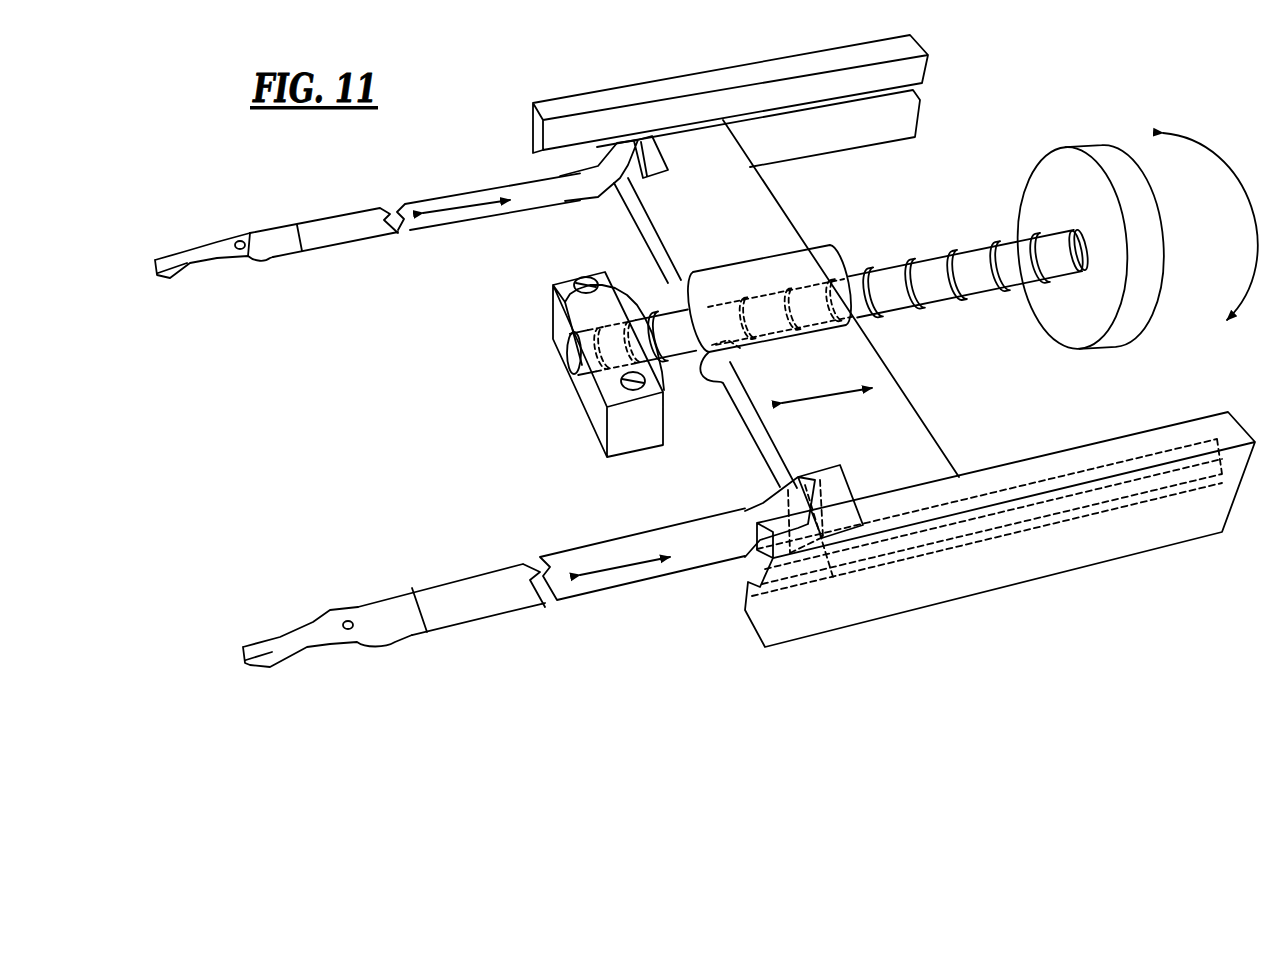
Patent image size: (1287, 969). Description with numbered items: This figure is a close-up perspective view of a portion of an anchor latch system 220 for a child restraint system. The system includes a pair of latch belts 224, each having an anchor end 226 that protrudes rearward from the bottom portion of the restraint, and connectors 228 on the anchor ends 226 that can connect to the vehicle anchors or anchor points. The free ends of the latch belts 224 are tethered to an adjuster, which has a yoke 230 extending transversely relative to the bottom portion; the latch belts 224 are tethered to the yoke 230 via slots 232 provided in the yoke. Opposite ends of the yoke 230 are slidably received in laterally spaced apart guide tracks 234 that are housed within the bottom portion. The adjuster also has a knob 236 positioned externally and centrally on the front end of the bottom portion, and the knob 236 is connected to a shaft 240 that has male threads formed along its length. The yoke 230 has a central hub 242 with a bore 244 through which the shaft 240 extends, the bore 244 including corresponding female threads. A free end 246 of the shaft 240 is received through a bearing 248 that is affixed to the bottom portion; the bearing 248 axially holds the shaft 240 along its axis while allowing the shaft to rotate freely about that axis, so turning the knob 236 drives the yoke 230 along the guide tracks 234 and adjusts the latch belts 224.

The anchor latch system 220 is at (970, 77).
The latch belts 224 is at (370, 235).
The anchor end 226 is at (268, 262).
The connectors 228 is at (224, 250).
The yoke 230 is at (765, 215).
The slots 232 is at (655, 158).
The guide tracks 234 is at (887, 99).
The knob 236 is at (1140, 210).
The shaft 240 is at (938, 300).
The central hub 242 is at (820, 258).
The bore 244 is at (718, 352).
The free end 246 is at (573, 357).
The bearing 248 is at (592, 418).